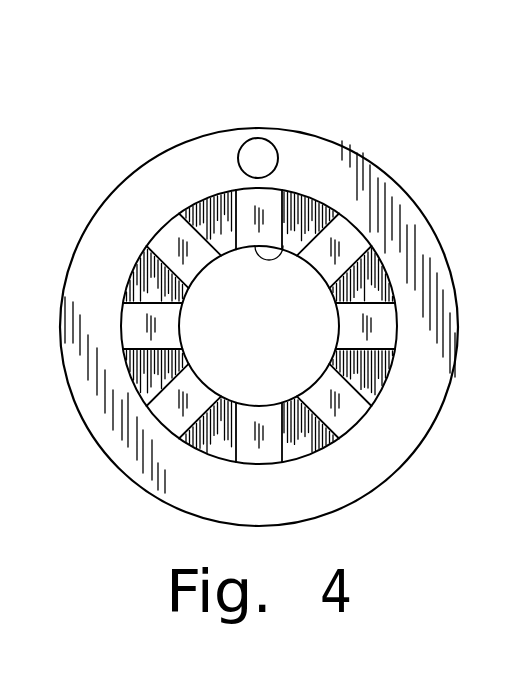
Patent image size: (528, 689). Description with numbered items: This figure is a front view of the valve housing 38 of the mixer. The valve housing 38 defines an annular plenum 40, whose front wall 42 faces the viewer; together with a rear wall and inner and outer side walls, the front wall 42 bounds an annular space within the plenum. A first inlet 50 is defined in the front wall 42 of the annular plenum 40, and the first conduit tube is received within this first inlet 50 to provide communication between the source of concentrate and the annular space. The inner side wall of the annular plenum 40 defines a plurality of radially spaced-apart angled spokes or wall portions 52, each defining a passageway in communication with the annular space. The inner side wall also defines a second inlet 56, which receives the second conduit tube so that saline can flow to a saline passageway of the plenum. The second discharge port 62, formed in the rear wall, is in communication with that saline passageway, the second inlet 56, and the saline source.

The valve housing 38 is at (306, 109).
The annular plenum 40 is at (148, 160).
The front wall 42 is at (395, 195).
The first inlet 50 is at (254, 149).
The angled spokes or wall portions 52 is at (376, 333).
The second inlet 56 is at (382, 275).
The second discharge port 62 is at (287, 247).